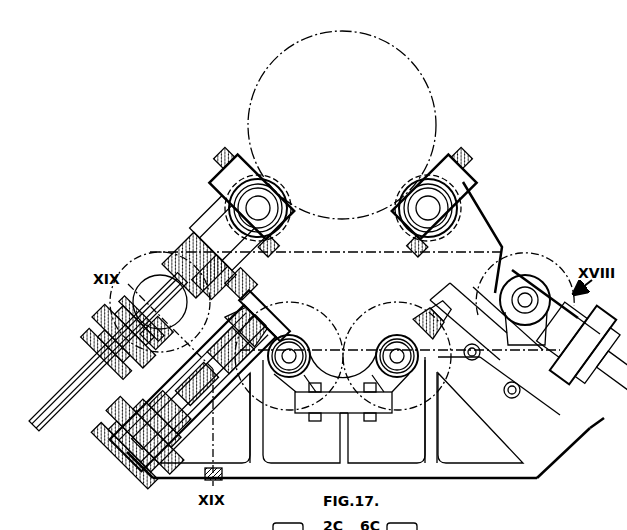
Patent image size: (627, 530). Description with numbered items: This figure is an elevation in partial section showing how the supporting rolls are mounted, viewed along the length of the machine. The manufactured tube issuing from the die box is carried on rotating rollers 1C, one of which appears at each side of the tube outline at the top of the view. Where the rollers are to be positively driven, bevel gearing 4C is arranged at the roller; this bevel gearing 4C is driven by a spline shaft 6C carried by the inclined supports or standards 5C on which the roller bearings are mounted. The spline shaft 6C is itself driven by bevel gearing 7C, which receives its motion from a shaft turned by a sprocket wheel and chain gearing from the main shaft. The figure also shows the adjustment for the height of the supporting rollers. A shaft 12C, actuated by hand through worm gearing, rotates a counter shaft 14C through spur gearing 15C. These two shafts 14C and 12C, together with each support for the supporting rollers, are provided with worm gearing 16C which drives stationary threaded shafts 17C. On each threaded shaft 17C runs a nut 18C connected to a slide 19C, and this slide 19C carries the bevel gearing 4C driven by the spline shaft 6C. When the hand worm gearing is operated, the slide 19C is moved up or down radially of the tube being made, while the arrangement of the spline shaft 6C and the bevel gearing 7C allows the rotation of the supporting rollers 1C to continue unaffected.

The rotating rollers 1C is at (267, 198).
The bevel gearing 4C is at (236, 205).
The inclined supports or standards 5C is at (586, 326).
The spline shaft 6C is at (187, 307).
The bevel gearing 7C is at (118, 313).
The shaft 12C is at (399, 350).
The counter shaft 14C is at (305, 339).
The spur gearing 15C is at (313, 322).
The worm gearing 16C is at (258, 312).
The stationary threaded shaft 17C is at (140, 452).
The nut 18C is at (426, 312).
The slide 19C is at (243, 285).